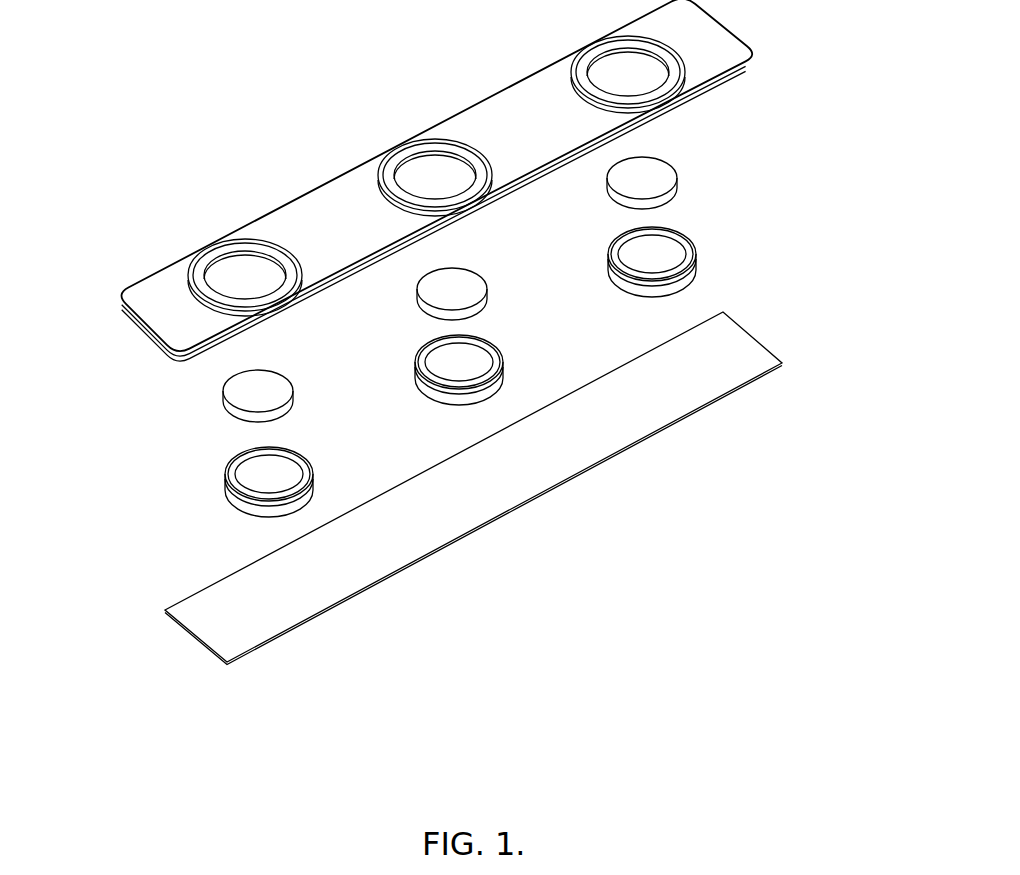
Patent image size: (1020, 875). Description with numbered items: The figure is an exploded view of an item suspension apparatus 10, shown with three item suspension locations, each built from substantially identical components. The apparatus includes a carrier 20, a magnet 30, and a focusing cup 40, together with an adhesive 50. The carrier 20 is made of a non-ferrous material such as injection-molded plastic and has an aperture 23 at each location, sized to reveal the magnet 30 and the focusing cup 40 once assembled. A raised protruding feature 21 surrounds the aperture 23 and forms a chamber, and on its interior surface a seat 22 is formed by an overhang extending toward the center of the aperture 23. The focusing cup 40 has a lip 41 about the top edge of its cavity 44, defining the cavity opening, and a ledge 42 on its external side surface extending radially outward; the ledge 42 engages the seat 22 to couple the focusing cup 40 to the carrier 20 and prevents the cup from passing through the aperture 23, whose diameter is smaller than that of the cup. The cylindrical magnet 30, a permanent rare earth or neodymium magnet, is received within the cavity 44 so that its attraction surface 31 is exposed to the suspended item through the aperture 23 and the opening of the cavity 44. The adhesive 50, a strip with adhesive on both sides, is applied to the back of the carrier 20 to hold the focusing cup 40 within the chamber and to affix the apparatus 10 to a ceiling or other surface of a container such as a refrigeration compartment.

The item suspension apparatus 10 is at (469, 332).
The carrier 20 is at (399, 180).
The protruding feature 21 is at (174, 247).
The seat 22 is at (384, 132).
The aperture 23 is at (195, 238).
The magnet 30 is at (240, 405).
The attraction surface 31 is at (295, 382).
The focusing cup 40 is at (240, 501).
The lip 41 is at (305, 465).
The ledge 42 is at (304, 490).
The cavity 44 is at (198, 489).
The adhesive 50 is at (473, 488).